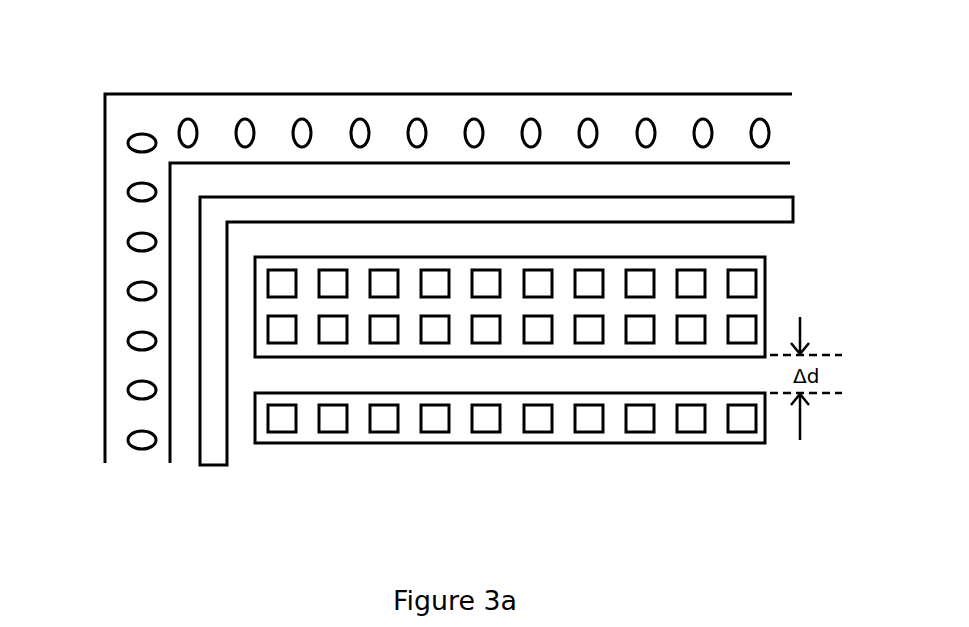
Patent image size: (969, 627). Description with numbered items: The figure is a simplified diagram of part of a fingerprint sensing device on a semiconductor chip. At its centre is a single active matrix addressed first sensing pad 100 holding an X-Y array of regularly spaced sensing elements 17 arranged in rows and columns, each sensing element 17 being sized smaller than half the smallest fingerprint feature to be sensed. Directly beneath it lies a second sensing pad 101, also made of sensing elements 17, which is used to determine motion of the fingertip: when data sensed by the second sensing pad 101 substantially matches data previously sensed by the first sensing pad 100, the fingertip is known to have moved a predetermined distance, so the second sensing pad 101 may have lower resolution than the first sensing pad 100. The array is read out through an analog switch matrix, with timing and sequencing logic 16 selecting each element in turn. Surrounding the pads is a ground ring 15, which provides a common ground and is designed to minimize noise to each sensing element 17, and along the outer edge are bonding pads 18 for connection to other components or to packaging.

The ground ring 15 is at (708, 245).
The timing and sequencing logic 16 is at (773, 195).
The sensing elements 17 is at (383, 422).
The bonding pads 18 is at (246, 118).
The first sensing pad 100 is at (767, 283).
The second sensing pad 101 is at (766, 420).